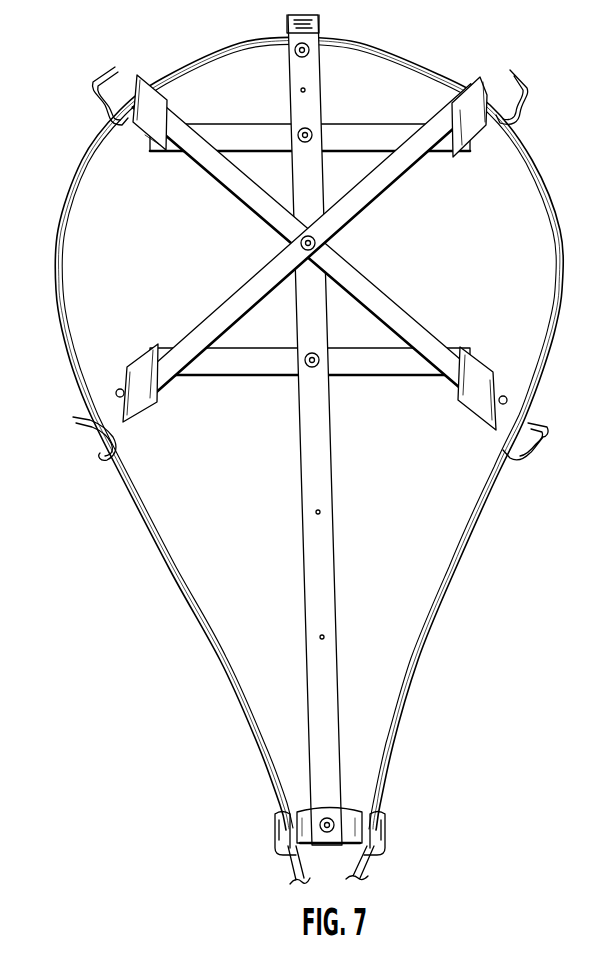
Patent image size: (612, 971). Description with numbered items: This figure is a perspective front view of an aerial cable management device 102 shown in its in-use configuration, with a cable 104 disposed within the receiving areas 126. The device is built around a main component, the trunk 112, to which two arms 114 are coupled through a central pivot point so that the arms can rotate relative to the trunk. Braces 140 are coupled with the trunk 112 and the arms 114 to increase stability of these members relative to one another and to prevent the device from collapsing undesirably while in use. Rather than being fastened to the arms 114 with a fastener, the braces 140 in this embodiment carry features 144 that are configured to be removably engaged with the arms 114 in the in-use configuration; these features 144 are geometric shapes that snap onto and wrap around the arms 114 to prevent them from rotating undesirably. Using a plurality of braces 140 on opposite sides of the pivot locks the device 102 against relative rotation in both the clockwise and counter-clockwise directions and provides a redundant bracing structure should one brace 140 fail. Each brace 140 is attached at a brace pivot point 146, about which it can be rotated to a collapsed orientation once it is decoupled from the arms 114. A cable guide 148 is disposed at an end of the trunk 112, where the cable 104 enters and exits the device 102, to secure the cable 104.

The aerial cable management device 102 is at (130, 28).
The cable 104 is at (415, 677).
The trunk 112 is at (322, 471).
The arm 114 is at (168, 367).
The receiving area 126 is at (493, 100).
The brace 140 is at (250, 360).
The feature 144 is at (482, 377).
The brace pivot point 146 is at (313, 137).
The cable guide 148 is at (383, 852).